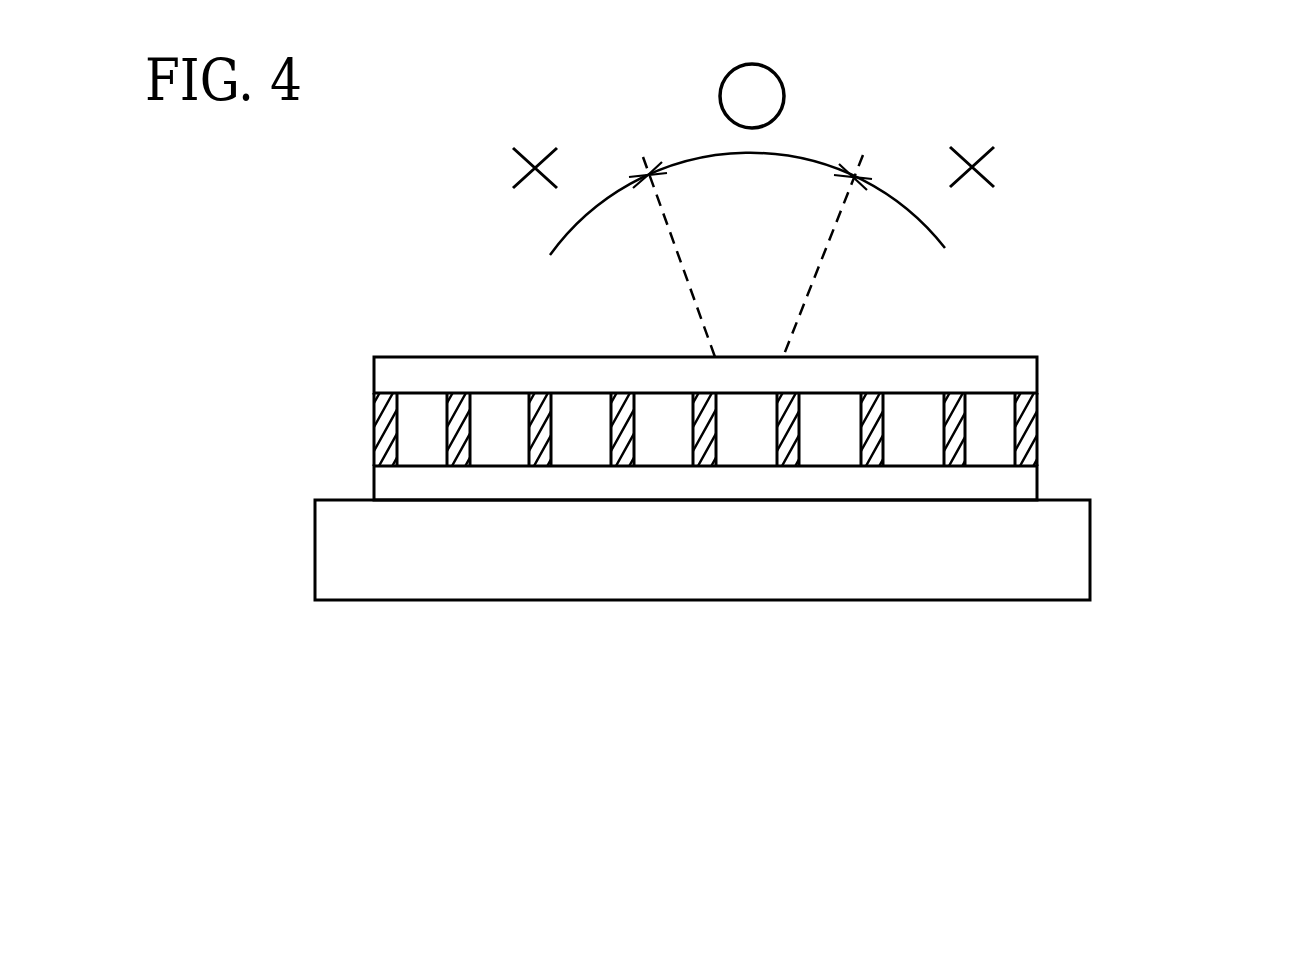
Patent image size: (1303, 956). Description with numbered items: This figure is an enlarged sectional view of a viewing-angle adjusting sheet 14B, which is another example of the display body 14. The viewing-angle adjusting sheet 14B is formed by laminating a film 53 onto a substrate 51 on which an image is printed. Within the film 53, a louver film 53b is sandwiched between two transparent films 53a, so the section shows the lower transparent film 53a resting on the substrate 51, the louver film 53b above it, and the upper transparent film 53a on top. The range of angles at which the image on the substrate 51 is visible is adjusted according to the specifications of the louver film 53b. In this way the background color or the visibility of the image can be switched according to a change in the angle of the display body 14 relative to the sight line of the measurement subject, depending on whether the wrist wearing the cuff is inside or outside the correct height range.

The viewing-angle adjusting sheet 14B is at (699, 408).
The display body 14 is at (1113, 353).
The film 53 is at (178, 340).
The transparent film 53a is at (375, 378).
The louver film 53b is at (375, 428).
The substrate 51 is at (862, 583).